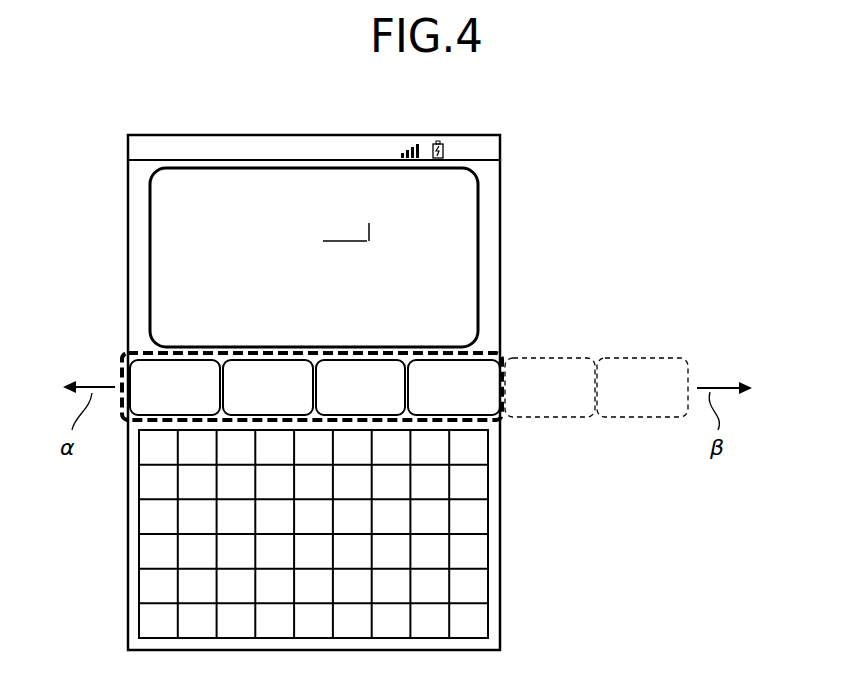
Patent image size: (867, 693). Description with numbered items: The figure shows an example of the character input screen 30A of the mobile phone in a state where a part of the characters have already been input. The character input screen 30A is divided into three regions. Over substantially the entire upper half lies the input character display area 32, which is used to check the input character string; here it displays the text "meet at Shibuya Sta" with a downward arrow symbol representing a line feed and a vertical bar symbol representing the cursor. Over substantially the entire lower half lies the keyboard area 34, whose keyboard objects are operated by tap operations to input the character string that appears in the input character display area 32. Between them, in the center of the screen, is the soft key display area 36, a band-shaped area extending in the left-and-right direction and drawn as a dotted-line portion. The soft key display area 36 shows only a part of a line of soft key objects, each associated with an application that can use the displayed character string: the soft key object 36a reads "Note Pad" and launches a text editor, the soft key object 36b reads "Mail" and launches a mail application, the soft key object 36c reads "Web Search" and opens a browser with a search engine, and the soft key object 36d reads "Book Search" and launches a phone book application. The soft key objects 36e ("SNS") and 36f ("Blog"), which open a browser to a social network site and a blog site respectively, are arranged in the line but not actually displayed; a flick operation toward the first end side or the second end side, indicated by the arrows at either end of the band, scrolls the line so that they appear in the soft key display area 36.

The character input screen 30A is at (500, 180).
The input character display area 32 is at (455, 229).
The keyboard area 34 is at (470, 587).
The soft key display area 36 is at (112, 405).
The soft key object 36a is at (140, 370).
The soft key object 36b is at (247, 367).
The soft key object 36c is at (382, 367).
The soft key object 36d is at (500, 413).
The soft key object 36e is at (575, 370).
The soft key object 36f is at (655, 370).